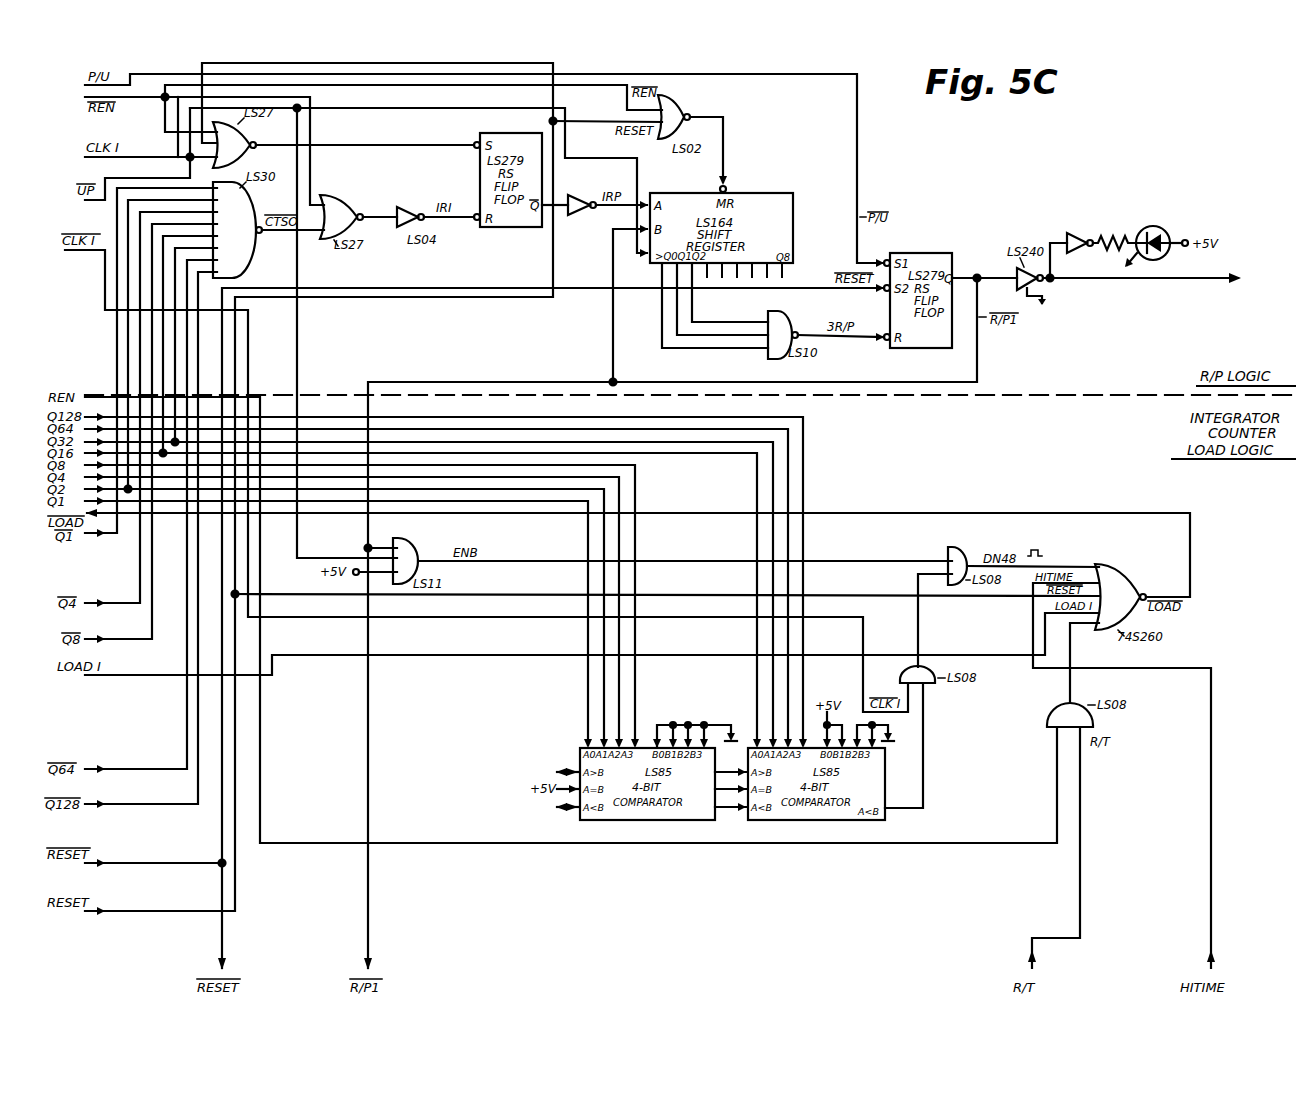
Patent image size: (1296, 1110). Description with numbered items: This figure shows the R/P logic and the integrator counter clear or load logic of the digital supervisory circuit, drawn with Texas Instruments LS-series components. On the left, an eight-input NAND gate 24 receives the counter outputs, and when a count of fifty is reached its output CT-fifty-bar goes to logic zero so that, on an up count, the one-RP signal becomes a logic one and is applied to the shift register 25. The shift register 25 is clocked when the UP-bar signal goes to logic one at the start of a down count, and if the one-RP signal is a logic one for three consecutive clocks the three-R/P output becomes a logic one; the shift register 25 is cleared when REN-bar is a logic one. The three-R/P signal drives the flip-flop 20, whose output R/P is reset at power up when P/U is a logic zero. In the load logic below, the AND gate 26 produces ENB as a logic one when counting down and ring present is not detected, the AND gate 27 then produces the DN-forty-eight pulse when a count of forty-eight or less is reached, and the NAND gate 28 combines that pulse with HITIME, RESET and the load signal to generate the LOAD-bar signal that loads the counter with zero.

The flip-flop 20 is at (942, 253).
The NAND gate 24 is at (250, 250).
The shift register 25 is at (793, 220).
The AND gate 26 is at (408, 540).
The AND gate 27 is at (962, 549).
The NAND gate 28 is at (1116, 571).